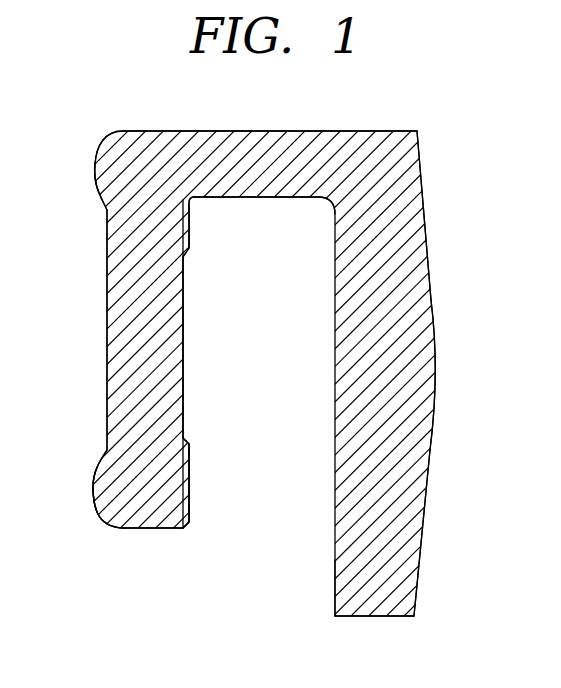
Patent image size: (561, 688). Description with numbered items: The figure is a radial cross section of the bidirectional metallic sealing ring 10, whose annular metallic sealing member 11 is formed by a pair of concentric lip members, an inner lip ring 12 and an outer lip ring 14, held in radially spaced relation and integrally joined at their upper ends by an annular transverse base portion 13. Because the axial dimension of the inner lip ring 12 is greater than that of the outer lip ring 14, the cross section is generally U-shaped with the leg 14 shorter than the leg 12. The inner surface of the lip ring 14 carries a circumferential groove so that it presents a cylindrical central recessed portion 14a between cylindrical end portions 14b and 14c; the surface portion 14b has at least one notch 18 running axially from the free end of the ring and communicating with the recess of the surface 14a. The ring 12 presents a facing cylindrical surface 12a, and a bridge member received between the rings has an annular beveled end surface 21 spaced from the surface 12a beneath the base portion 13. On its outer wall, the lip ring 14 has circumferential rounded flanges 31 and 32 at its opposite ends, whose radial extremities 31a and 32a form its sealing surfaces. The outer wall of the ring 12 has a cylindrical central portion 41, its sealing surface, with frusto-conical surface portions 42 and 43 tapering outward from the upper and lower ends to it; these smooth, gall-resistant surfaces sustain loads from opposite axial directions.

The bidirectional metallic sealing ring 10 is at (487, 127).
The annular metallic sealing member 11 is at (358, 122).
The inner lip ring 12 is at (381, 628).
The cylindrical surface of ring 12 12a is at (334, 600).
The transverse base portion 13 is at (289, 186).
The outer lip ring 14 is at (133, 542).
The cylindrical central recessed portion 14a is at (182, 350).
The cylindrical end portion 14b is at (188, 507).
The cylindrical end portion 14c is at (190, 250).
The notch 18 is at (190, 223).
The annular beveled end surface 21 is at (560, 666).
The circumferential rounded flange 31 is at (108, 150).
The radial extremity 31a is at (95, 173).
The circumferential rounded flange 32 is at (108, 482).
The radial extremity 32a is at (94, 496).
The central portion of circular cylinder configuration 41 is at (440, 348).
The frusto-conical surface portion 42 is at (425, 222).
The frusto-conical surface portion 43 is at (427, 503).